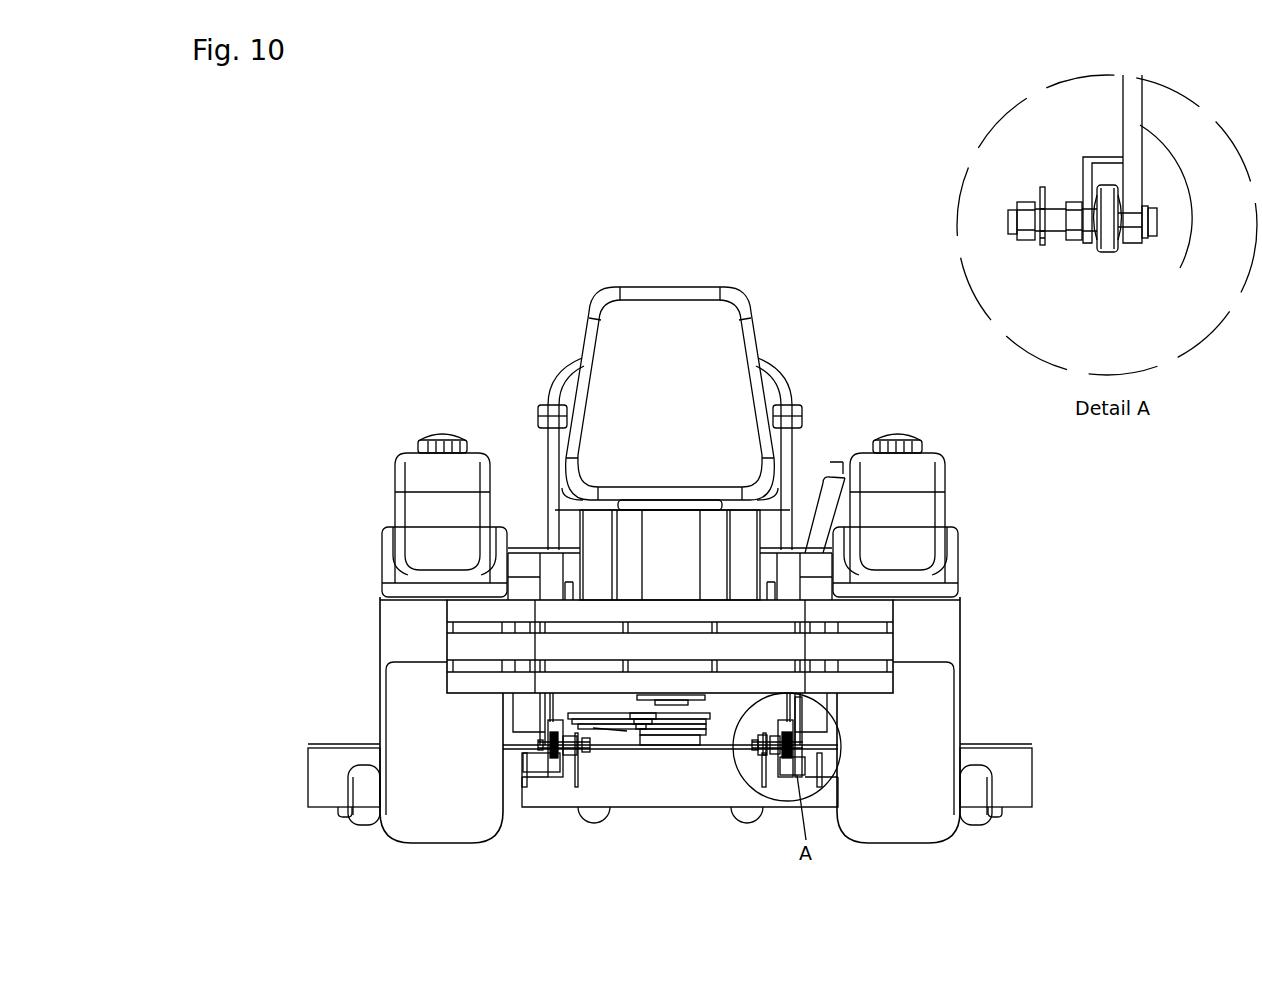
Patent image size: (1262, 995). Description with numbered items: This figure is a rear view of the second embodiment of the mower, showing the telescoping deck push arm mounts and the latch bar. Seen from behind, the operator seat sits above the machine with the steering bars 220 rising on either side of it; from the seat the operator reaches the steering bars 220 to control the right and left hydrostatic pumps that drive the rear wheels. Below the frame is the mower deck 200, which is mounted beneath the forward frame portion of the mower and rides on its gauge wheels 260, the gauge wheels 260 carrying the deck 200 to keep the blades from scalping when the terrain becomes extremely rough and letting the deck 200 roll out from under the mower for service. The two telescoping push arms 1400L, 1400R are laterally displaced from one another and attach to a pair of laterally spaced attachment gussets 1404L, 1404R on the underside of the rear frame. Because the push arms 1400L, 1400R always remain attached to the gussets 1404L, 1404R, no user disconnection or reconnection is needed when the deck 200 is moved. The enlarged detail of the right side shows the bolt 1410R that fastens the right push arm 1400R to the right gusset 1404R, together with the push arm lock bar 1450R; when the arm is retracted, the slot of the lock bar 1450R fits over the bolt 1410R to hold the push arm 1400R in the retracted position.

The mower deck 200 is at (1027, 777).
The steering bars 220 is at (553, 386).
The gauge wheels 260 is at (365, 820).
The telescoping push arm 1400L is at (587, 809).
The attachment gusset 1404L is at (546, 715).
The telescoping push arm 1400R is at (797, 770).
The attachment gusset 1404R is at (797, 710).
The bolt 1410R is at (1060, 212).
The push arm lock bar 1450R is at (1045, 245).